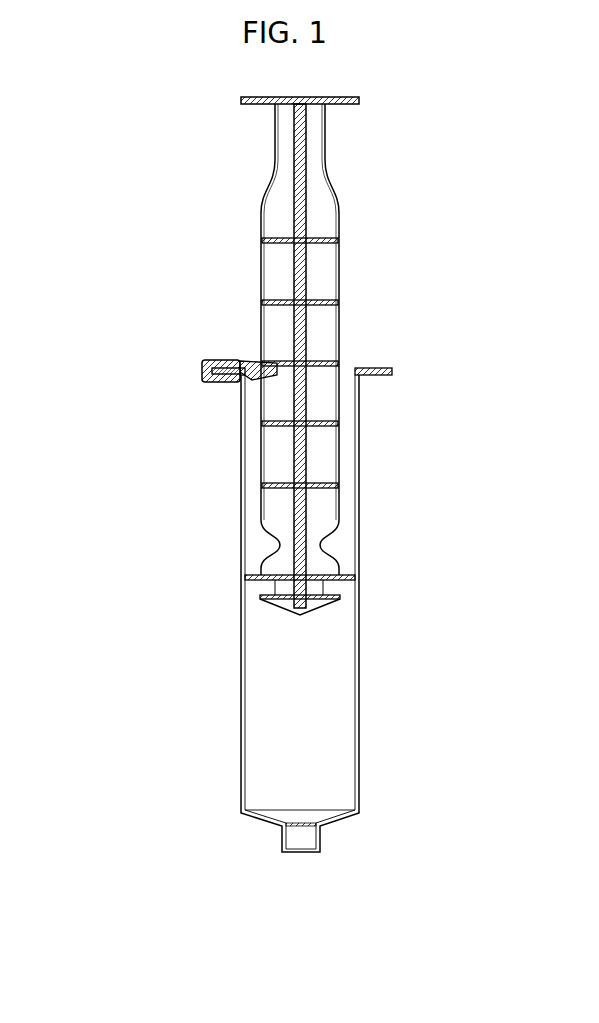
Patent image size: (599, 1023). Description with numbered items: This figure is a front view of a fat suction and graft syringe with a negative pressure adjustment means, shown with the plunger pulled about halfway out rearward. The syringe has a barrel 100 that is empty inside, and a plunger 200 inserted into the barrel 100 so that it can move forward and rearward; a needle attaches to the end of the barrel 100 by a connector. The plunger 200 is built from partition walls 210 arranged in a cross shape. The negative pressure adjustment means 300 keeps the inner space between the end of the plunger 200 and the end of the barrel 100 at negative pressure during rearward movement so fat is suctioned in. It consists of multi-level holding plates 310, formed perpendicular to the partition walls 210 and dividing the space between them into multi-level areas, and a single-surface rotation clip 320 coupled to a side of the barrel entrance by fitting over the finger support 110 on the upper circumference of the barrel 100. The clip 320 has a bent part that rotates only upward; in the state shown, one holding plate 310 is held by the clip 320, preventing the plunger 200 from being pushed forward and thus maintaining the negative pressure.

The barrel 100 is at (359, 642).
The finger support 110 is at (376, 368).
The plunger 200 is at (339, 268).
The partition walls 210 is at (306, 196).
The negative pressure adjustment means 300 is at (151, 377).
The multi-level holding plate 310 is at (277, 358).
The single-surface rotation clip 320 is at (202, 378).